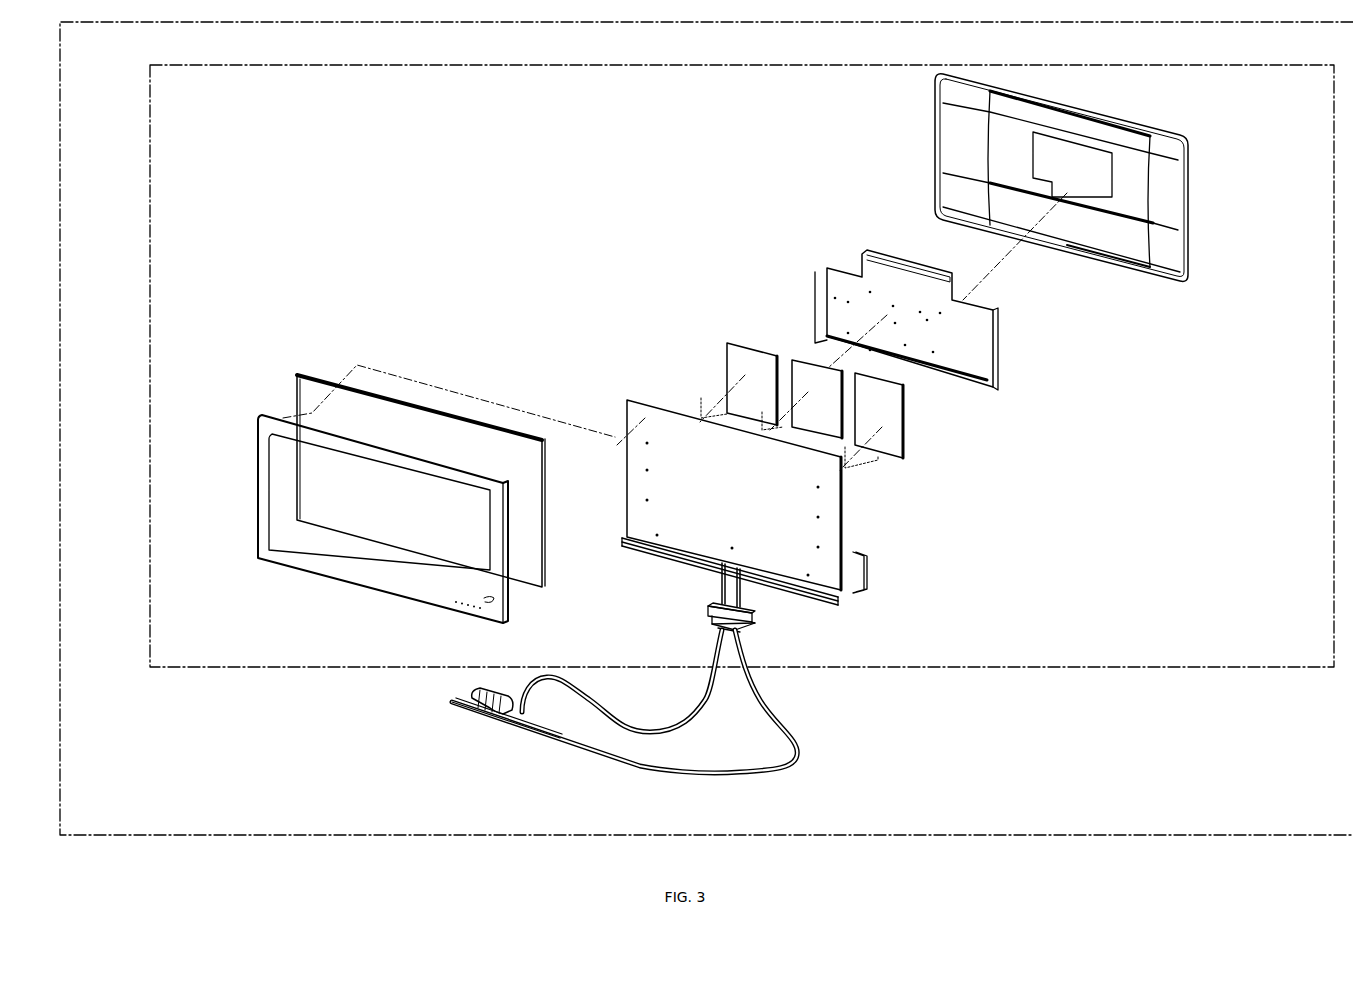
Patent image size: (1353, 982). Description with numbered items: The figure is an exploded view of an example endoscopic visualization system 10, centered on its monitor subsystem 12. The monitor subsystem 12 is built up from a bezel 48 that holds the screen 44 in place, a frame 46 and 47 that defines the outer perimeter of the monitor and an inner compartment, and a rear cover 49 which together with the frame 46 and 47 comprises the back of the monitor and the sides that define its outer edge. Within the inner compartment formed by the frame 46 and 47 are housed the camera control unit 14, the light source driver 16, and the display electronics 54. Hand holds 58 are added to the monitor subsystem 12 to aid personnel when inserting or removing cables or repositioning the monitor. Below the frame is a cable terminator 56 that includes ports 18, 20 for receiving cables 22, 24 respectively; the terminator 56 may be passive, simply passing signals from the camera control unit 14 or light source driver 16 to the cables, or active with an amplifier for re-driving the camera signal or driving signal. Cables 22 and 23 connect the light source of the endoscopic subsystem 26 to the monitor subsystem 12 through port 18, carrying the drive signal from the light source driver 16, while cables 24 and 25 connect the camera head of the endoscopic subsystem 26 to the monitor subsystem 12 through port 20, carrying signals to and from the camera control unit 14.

The endoscopic visualization system 10 is at (706, 428).
The monitor subsystem 12 is at (742, 366).
The camera control unit 14 is at (727, 348).
The light source driver 16 is at (792, 360).
The port 18 is at (710, 620).
The port 20 is at (737, 623).
The cable 22 is at (590, 700).
The cable 23 is at (722, 590).
The cable 24 is at (753, 772).
The cable 25 is at (742, 595).
The endoscopic subsystem 26 is at (473, 698).
The screen 44 is at (298, 377).
The frame 46 is at (842, 523).
The frame 47 is at (993, 370).
The bezel 48 is at (281, 414).
The rear cover 49 is at (1188, 213).
The display electronics 54 is at (905, 412).
The cable terminator 56 is at (757, 605).
The hand holds 58 is at (870, 572).